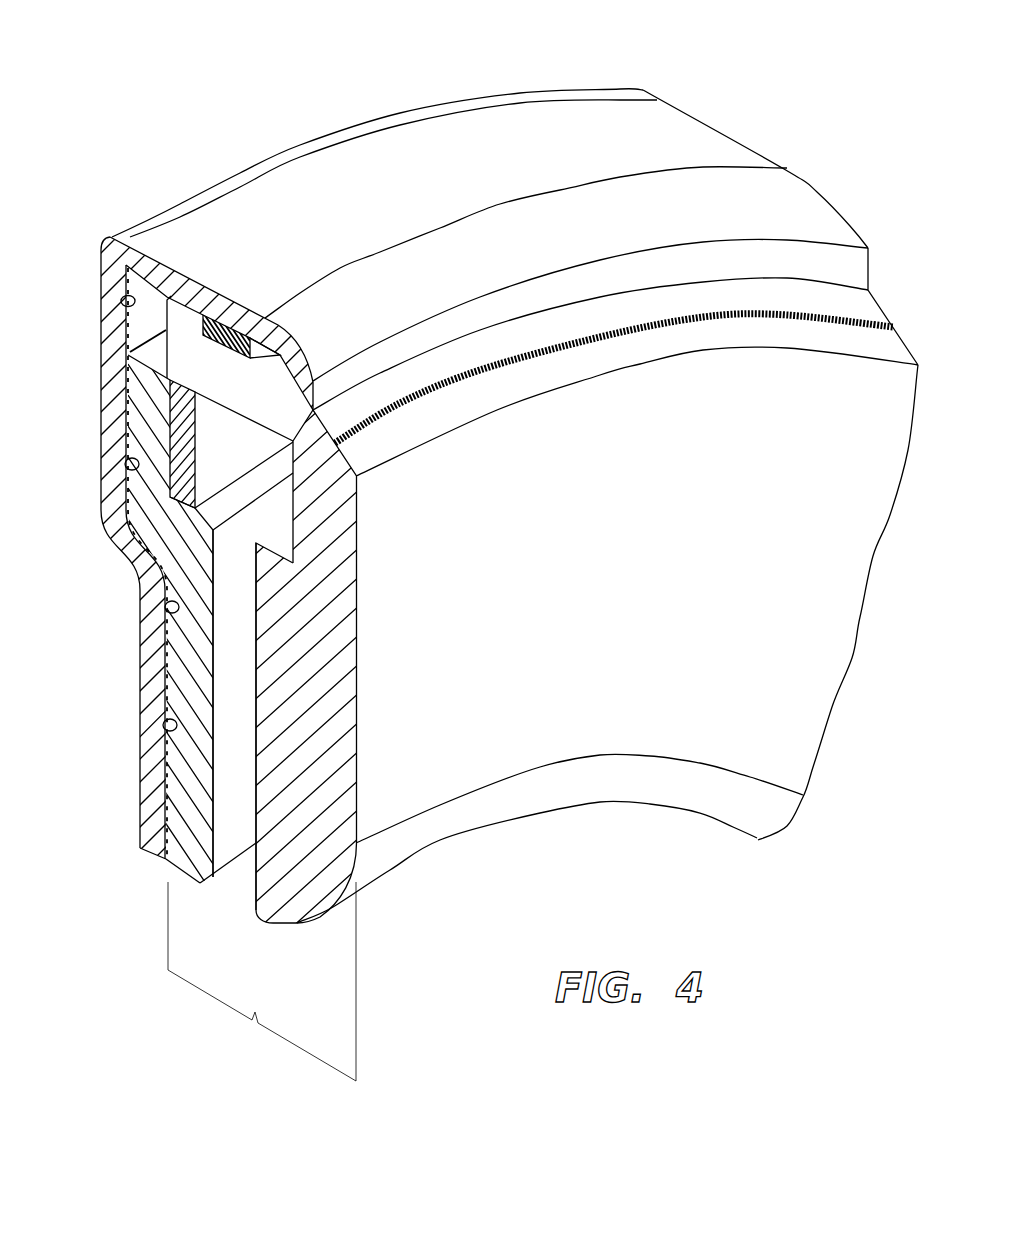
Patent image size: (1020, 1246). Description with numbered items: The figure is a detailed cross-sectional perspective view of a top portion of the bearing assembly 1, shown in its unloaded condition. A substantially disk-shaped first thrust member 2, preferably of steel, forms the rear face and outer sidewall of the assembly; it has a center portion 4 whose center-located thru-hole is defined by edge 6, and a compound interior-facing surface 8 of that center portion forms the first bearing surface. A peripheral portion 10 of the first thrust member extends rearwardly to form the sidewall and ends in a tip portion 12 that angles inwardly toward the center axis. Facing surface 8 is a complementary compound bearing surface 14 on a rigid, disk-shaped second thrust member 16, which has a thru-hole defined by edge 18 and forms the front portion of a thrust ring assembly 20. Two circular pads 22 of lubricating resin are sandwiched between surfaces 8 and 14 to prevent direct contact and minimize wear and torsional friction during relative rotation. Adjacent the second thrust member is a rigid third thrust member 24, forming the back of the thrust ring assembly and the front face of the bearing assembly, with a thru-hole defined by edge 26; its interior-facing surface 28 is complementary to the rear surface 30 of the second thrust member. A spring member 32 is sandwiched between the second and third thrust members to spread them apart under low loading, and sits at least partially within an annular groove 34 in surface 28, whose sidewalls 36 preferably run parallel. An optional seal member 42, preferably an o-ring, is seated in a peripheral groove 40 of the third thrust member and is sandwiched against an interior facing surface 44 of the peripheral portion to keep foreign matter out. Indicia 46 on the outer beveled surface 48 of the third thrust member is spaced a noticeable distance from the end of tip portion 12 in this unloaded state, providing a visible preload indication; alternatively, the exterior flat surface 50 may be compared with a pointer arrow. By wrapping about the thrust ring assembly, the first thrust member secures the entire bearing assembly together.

The bearing assembly 1 is at (515, 65).
The first thrust member 2 is at (152, 755).
The center portion 4 is at (115, 328).
The edge 6 is at (150, 860).
The compound interior-facing surface 8 is at (121, 301).
The peripheral portion 10 is at (292, 178).
The tip portion 12 is at (280, 341).
The compound bearing surface 14 is at (125, 464).
The second thrust member 16 is at (187, 827).
The edge 18 is at (183, 875).
The thrust ring assembly 20 is at (262, 981).
The circular pads 22 is at (127, 373).
The third thrust member 24 is at (410, 842).
The edge 26 is at (263, 918).
The interior-facing surface 28 is at (256, 680).
The rear surface 30 is at (223, 845).
The spring member 32 is at (180, 427).
The annular groove 34 is at (291, 512).
The sidewalls 36 is at (233, 408).
The peripheral groove 40 is at (250, 357).
The seal member 42 is at (227, 327).
The interior facing surface 44 is at (125, 282).
The indicia 46 is at (612, 336).
The outer beveled surface 48 is at (681, 344).
The exterior flat surface 50 is at (643, 628).